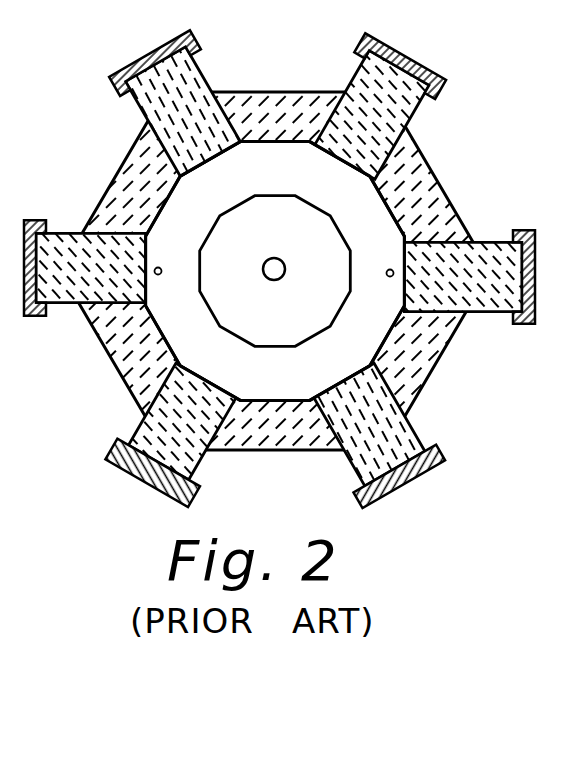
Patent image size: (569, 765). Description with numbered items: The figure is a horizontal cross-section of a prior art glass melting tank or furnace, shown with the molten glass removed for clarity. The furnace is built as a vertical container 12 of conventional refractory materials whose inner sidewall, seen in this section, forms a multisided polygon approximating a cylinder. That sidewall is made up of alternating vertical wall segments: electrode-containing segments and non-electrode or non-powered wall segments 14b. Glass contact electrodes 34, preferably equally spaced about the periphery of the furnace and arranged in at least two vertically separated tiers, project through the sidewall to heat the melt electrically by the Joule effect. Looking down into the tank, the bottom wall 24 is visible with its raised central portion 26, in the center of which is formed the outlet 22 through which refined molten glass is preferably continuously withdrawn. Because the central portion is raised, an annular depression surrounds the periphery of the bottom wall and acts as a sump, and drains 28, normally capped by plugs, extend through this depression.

The vertical container 12 is at (452, 204).
The non-electrode wall segments 14b is at (425, 172).
The outlet 22 is at (273, 280).
The bottom wall 24 is at (291, 177).
The raised central portion 26 is at (295, 241).
The drains 28 is at (160, 275).
The glass contact electrodes 34 is at (360, 77).